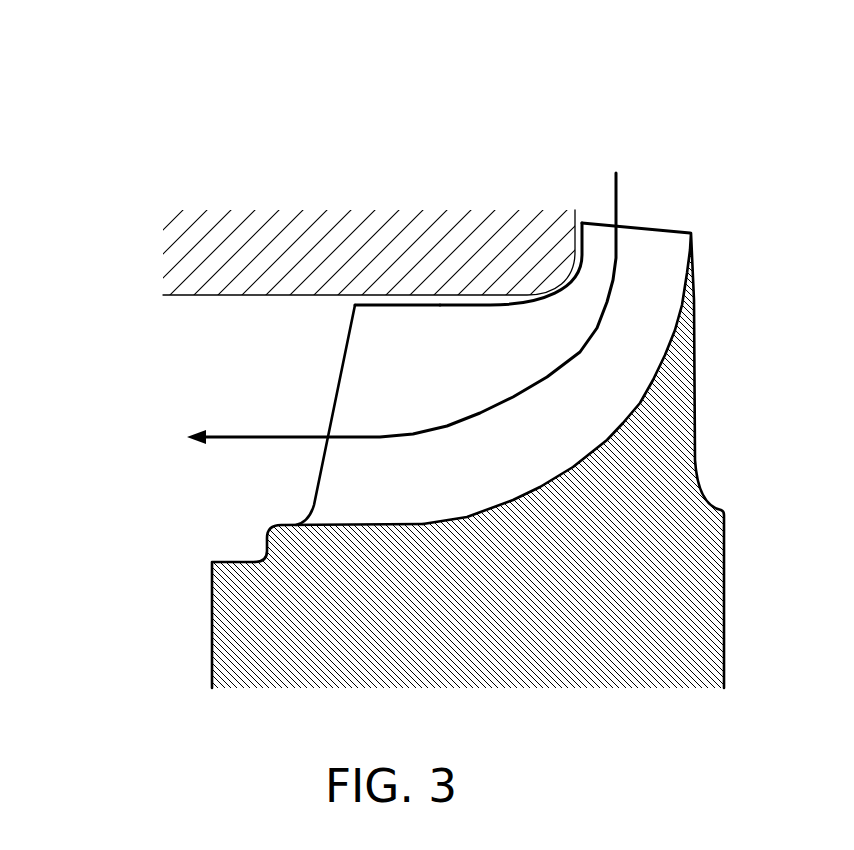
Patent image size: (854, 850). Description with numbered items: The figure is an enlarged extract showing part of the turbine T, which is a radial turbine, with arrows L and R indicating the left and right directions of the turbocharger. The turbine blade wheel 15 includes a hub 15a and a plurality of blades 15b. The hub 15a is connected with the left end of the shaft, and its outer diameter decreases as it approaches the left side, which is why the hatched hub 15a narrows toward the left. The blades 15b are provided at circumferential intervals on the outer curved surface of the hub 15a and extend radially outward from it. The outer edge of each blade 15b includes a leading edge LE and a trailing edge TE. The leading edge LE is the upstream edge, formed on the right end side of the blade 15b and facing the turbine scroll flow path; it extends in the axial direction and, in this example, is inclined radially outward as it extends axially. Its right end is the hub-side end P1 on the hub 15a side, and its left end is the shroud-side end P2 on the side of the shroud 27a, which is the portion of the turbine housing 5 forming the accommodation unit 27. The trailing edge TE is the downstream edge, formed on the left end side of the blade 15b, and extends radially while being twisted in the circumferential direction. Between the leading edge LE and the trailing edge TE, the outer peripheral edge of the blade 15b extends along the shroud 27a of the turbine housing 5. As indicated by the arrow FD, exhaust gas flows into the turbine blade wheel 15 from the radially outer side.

The turbine housing 5 is at (315, 238).
The accommodation unit 27 is at (422, 295).
The shroud 27a is at (488, 295).
The turbine blade wheel 15 is at (106, 554).
The hub 15a is at (212, 620).
The blade 15b is at (320, 482).
The leading edge LE is at (648, 228).
The trailing edge TE is at (320, 460).
The hub-side end P1 is at (692, 232).
The shroud-side end P2 is at (583, 222).
The arrow indicating exhaust gas flow direction FD is at (618, 278).
The turbine T is at (135, 109).
The left direction L is at (643, 33).
The right direction R is at (685, 33).